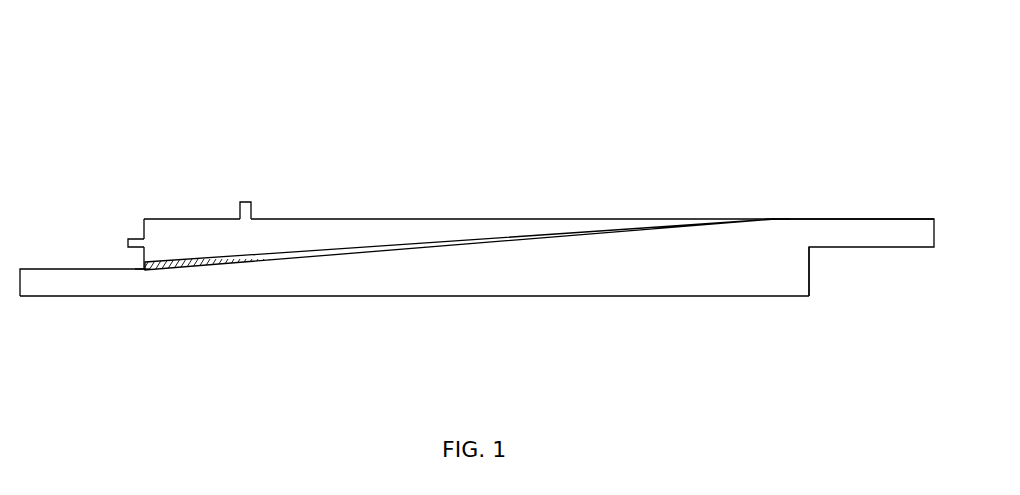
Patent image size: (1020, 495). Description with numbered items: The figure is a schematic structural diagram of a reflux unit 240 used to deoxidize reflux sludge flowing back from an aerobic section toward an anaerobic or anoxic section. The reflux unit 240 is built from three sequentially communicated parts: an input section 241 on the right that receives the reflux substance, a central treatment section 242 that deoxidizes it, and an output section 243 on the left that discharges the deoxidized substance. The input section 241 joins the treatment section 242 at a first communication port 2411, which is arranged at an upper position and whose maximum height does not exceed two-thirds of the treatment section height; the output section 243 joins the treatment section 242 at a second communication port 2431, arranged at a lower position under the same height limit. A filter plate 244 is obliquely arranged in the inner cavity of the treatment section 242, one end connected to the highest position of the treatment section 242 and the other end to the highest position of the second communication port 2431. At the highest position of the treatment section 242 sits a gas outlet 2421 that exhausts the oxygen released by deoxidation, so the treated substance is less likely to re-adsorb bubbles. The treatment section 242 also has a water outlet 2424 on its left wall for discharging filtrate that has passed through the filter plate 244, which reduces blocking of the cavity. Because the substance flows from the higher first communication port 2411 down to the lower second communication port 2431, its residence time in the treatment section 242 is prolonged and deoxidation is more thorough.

The reflux unit 240 is at (515, 46).
The input section 241 is at (878, 232).
The first communication port 2411 is at (779, 214).
The treatment section 242 is at (555, 258).
The gas outlet 2421 is at (250, 198).
The water outlet 2424 is at (120, 236).
The output section 243 is at (92, 275).
The second communication port 2431 is at (148, 278).
The filter plate 244 is at (367, 255).